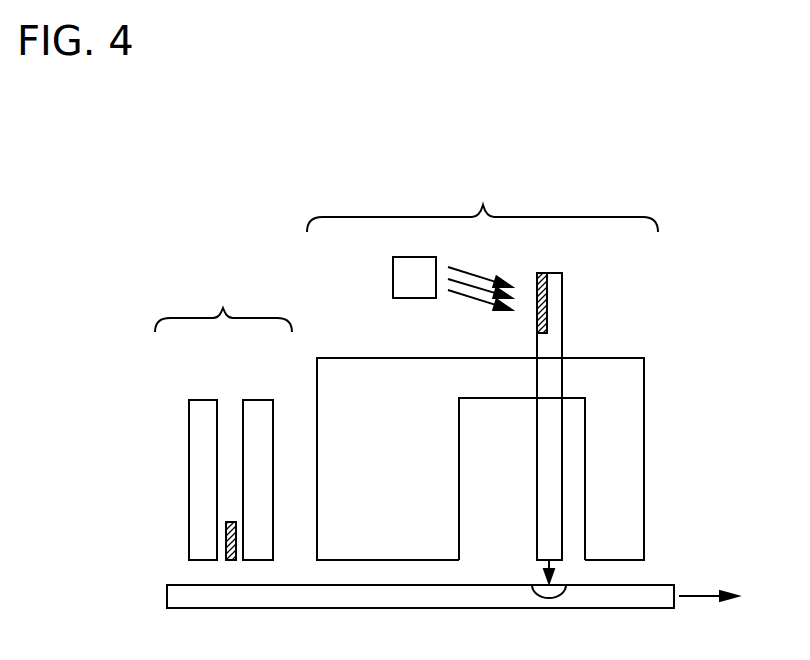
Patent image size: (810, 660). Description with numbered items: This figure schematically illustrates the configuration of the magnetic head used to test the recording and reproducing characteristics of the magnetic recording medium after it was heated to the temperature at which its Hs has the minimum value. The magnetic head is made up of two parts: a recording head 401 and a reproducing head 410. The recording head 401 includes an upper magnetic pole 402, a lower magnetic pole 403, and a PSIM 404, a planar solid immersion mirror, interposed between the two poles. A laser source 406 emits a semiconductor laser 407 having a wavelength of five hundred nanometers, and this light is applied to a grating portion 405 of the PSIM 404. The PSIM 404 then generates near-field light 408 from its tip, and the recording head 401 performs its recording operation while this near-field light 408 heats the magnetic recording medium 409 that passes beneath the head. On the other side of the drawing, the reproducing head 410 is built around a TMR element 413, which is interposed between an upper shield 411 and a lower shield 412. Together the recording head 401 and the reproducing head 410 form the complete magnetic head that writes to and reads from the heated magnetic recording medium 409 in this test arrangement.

The recording head 401 is at (482, 206).
The upper magnetic pole 402 is at (617, 435).
The lower magnetic pole 403 is at (438, 488).
The PSIM (Planar Solid Immersion Mirror) 404 is at (552, 343).
The grating portion 405 is at (536, 283).
The laser source 406 is at (407, 276).
The semiconductor laser 407 is at (470, 302).
The near-field light 408 is at (540, 562).
The magnetic recording medium 409 is at (643, 597).
The reproducing head 410 is at (228, 523).
The upper shield 411 is at (202, 412).
The lower shield 412 is at (262, 412).
The TMR element 413 is at (223, 304).